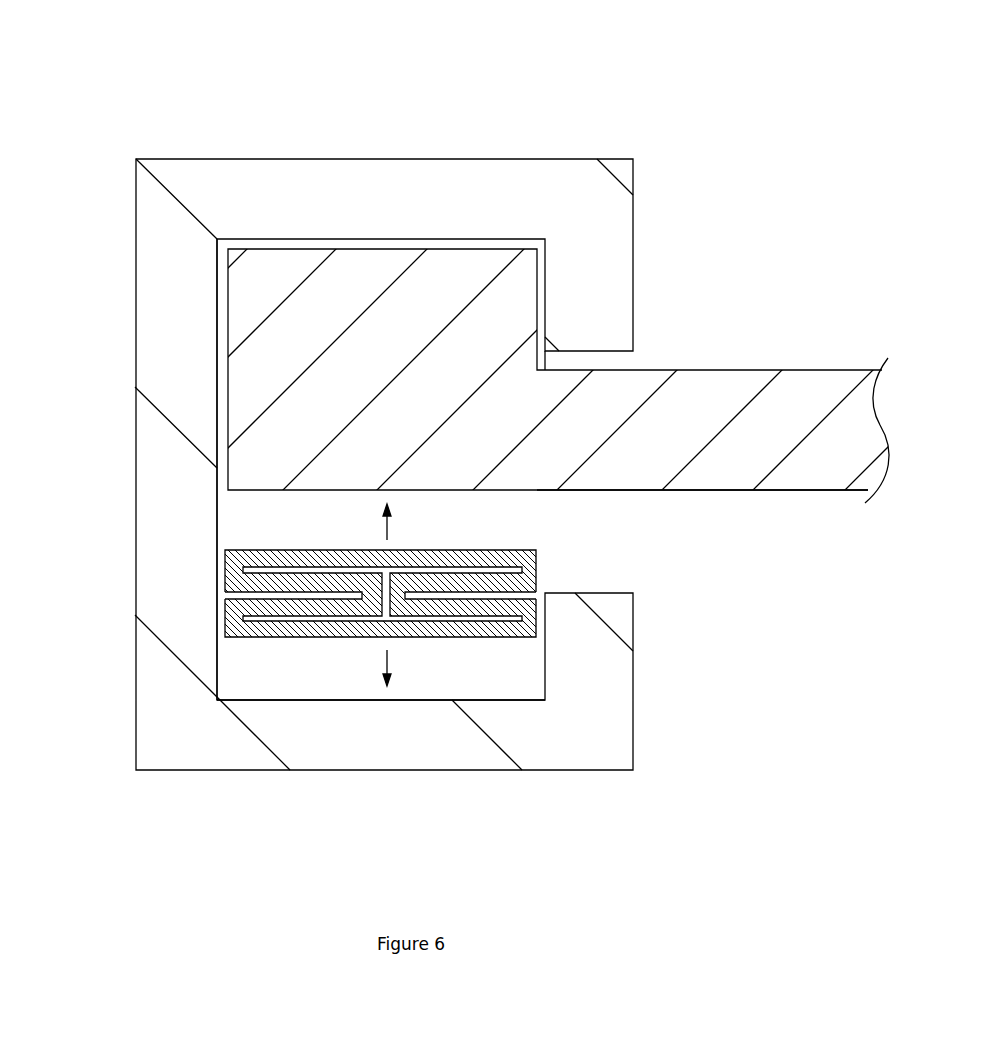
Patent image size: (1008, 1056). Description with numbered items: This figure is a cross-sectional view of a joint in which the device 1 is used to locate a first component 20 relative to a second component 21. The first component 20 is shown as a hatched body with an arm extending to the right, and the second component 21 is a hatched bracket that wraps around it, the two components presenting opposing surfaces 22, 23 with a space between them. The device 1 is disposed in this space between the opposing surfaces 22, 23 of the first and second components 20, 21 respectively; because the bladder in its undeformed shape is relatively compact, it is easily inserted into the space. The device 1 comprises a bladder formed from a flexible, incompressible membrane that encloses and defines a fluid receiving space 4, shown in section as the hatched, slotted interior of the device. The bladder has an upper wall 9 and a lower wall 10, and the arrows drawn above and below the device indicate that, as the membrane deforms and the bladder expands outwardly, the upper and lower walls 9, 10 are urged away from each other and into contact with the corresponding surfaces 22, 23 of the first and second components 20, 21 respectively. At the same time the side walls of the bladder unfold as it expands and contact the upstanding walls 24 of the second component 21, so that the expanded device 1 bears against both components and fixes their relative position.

The device 1 is at (338, 691).
The fluid receiving space 4 is at (297, 618).
The upper wall 9 is at (310, 548).
The lower wall 10 is at (528, 627).
The first component 20 is at (263, 272).
The second component 21 is at (423, 182).
The surface of the first component 22 is at (465, 491).
The surface of the second component 23 is at (422, 700).
The upstanding walls 24 is at (217, 410).